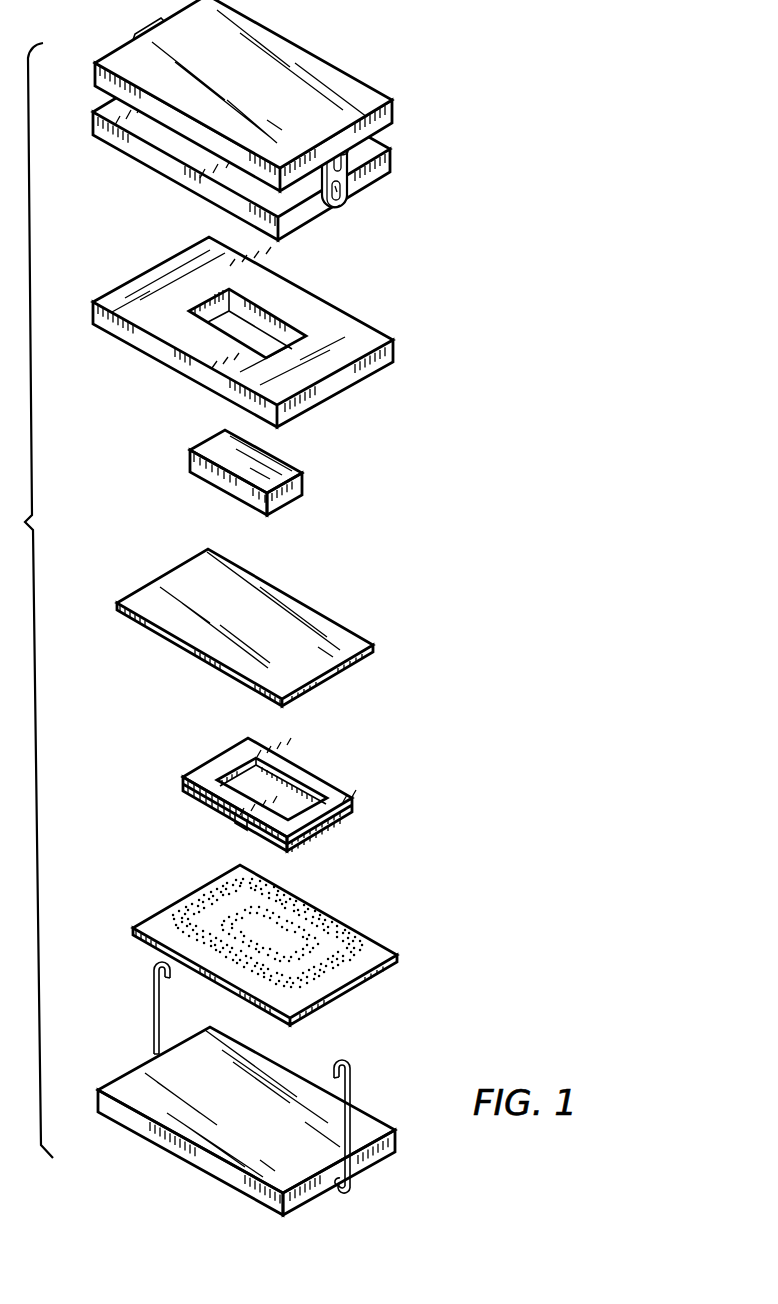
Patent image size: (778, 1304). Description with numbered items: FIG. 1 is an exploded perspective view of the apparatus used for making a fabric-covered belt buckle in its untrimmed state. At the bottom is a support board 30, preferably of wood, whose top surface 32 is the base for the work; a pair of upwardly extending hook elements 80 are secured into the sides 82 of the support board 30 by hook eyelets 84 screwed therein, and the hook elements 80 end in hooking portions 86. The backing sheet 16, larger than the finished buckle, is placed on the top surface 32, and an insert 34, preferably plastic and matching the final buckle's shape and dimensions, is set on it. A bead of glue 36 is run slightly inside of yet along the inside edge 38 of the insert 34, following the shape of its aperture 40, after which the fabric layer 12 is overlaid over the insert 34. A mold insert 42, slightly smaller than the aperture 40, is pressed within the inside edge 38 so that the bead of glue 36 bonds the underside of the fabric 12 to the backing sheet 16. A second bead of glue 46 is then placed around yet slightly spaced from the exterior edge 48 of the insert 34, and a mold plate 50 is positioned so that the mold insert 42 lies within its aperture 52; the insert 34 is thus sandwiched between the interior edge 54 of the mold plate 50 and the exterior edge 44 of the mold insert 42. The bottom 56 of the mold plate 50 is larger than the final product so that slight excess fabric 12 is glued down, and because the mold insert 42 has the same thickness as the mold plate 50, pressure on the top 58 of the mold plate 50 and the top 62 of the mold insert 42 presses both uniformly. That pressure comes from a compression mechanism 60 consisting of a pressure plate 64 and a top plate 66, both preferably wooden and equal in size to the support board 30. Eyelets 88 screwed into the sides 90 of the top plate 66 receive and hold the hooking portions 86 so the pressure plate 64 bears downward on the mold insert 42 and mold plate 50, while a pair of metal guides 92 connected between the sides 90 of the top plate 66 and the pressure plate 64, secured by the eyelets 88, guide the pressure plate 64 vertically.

The fabric layer 12 is at (338, 641).
The backing sheet 16 is at (296, 945).
The support board 30 is at (279, 1121).
The top surface 32 is at (370, 1127).
The insert 34 is at (288, 795).
The bead of glue 36 is at (287, 923).
The inside edge 38 is at (287, 772).
The aperture 40 is at (212, 790).
The mold insert 42 is at (252, 479).
The exterior edge 44 is at (280, 500).
The second bead of glue 46 is at (257, 893).
The exterior edge 48 is at (215, 762).
The mold plate 50 is at (263, 331).
The aperture 52 is at (227, 327).
The interior edge 54 is at (262, 305).
The bottom 56 is at (343, 390).
The top 58 is at (153, 270).
The compression mechanism 60 is at (306, 123).
The top 62 is at (212, 448).
The pressure plate 64 is at (385, 170).
The top plate 66 is at (280, 95).
The hook elements 80 is at (152, 1000).
The sides 82 is at (390, 1142).
The hook eyelets 84 is at (334, 1185).
The hooking portions 86 is at (343, 1063).
The eyelets 88 is at (375, 193).
The sides 90 is at (392, 103).
The metal guides 92 is at (348, 187).